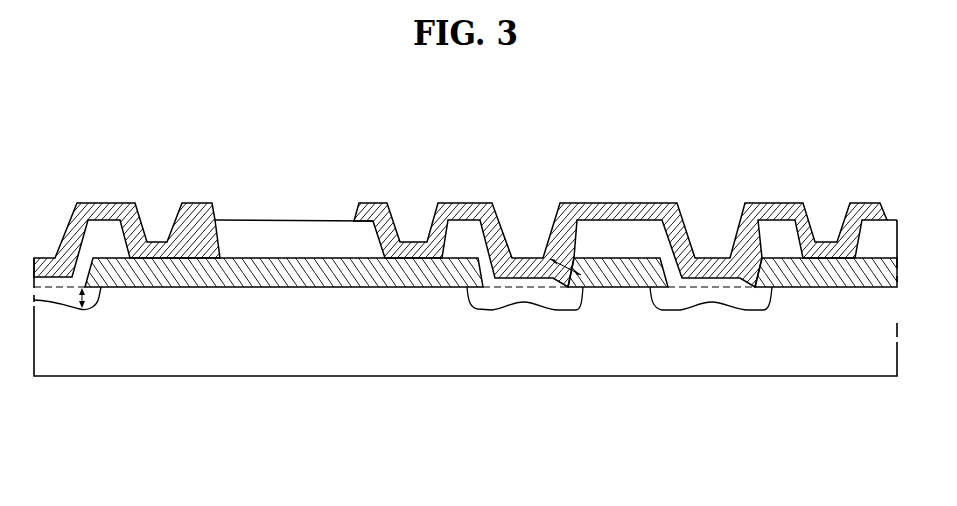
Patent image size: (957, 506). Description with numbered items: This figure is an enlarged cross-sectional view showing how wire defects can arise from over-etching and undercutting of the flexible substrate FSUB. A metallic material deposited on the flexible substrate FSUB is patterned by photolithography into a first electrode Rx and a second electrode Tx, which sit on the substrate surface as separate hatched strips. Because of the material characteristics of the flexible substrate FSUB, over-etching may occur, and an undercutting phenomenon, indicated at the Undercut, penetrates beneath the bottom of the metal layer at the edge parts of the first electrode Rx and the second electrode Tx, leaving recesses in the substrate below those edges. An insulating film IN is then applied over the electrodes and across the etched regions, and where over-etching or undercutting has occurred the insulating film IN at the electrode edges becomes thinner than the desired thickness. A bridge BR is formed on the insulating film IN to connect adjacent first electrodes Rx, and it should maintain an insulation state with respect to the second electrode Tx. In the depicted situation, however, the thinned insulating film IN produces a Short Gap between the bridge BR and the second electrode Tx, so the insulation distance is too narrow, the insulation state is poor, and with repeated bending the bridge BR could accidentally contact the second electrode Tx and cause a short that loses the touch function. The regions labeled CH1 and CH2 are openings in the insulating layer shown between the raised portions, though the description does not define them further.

The insulating film IN is at (102, 230).
The first channel CH1 is at (157, 201).
The second channel CH2 is at (407, 201).
The bridge BR is at (193, 230).
The undercutting Undercut is at (80, 300).
The first electrode Rx is at (283, 270).
The second electrode Tx is at (618, 275).
The flexible substrate FSUB is at (747, 362).
The short gap Short Gap is at (563, 268).